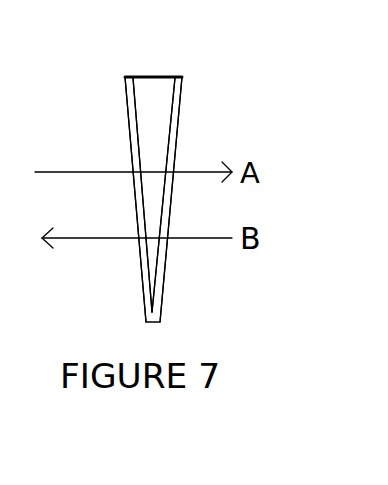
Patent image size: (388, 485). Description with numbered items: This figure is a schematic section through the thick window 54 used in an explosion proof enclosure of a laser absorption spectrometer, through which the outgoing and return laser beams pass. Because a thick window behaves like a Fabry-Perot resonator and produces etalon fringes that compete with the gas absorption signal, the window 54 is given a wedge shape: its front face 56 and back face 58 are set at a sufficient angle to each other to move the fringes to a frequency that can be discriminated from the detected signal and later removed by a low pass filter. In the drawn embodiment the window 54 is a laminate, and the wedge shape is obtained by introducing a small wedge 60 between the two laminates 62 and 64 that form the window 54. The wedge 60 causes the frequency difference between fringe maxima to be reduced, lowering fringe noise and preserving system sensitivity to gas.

The thick window 54 is at (164, 162).
The front face 56 is at (182, 96).
The back face 58 is at (131, 125).
The small wedge 60 is at (142, 103).
The first laminate 62 is at (175, 138).
The second laminate 64 is at (138, 158).